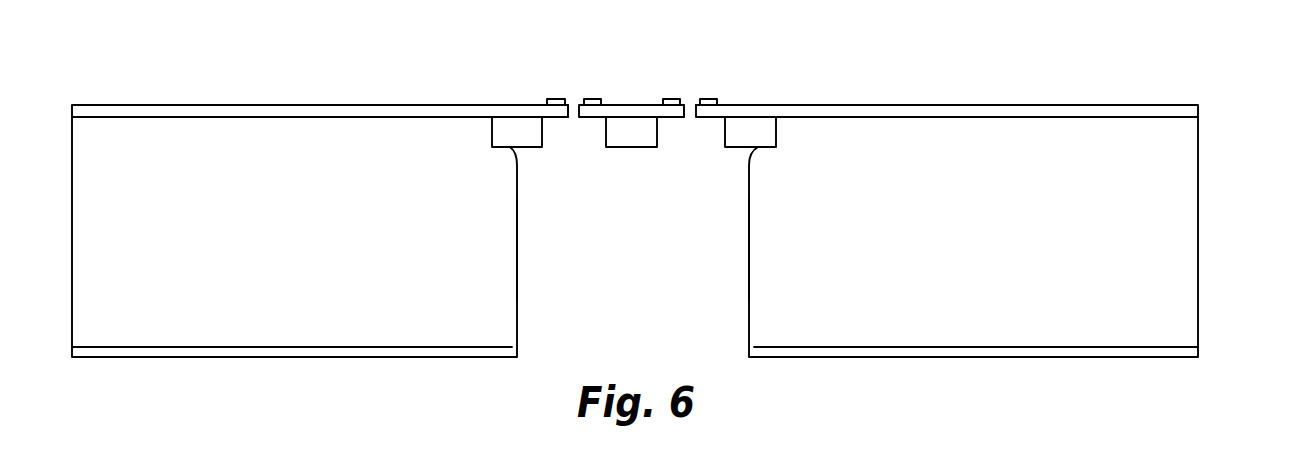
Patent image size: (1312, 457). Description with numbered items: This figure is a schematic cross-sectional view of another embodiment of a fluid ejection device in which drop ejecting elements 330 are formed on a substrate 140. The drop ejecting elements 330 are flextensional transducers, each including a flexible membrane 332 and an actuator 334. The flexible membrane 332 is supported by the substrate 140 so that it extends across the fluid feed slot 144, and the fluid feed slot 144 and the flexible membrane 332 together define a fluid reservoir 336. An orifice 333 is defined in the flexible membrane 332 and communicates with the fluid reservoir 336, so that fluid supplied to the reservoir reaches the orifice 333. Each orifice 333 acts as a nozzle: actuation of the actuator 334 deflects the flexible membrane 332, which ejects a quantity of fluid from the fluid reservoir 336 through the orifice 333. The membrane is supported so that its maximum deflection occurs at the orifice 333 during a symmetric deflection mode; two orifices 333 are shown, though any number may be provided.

The substrate 140 is at (1207, 117).
The fluid feed slot 144 is at (655, 278).
The drop ejecting elements 330 is at (838, 43).
The flexible membrane 332 is at (1213, 105).
The orifice 333 is at (569, 114).
The actuator 334 is at (592, 98).
The fluid reservoir 336 is at (652, 174).